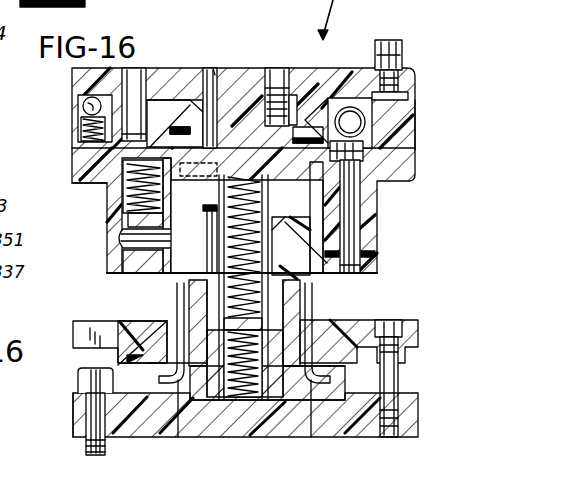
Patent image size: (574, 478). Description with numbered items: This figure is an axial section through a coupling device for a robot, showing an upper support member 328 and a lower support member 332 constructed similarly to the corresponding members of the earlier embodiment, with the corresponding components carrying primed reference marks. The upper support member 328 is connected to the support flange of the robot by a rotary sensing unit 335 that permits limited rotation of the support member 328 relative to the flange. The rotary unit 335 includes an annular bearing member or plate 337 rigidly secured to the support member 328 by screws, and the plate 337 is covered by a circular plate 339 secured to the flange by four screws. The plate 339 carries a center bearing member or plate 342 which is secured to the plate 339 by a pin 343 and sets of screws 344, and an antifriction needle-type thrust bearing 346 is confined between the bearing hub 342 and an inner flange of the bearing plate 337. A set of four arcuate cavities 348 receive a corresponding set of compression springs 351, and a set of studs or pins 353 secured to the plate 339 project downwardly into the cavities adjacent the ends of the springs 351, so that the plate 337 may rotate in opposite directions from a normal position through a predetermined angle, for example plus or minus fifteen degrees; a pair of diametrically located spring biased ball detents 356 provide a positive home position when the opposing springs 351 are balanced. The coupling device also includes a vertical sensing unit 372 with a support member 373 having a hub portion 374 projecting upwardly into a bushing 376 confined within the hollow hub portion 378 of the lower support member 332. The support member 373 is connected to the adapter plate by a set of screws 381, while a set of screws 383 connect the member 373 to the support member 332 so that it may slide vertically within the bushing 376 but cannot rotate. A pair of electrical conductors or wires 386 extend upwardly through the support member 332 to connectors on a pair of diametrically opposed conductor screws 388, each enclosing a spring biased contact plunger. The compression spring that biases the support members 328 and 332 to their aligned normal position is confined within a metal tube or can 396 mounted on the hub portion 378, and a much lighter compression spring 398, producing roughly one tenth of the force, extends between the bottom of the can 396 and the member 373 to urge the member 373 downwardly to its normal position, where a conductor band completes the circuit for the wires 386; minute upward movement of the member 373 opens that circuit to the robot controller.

The rotary sensing unit 335 is at (68, 124).
The upper support member 328 is at (72, 163).
The spring biased ball detents 356 is at (84, 107).
The studs or pins 353 is at (125, 88).
The center bearing member or plate 342 is at (250, 98).
The antifriction needle-type thrust bearing 346 is at (193, 98).
The pin 343 is at (213, 67).
The screws 344 is at (276, 67).
The compression springs 351 is at (357, 100).
The circular plate 339 is at (363, 63).
The annular bearing member or plate 337 is at (398, 98).
The arcuate cavities 348 is at (415, 118).
The metal tube or can 396 is at (283, 218).
The hub portion 374 is at (275, 385).
The compression spring 398 is at (252, 392).
The hollow hub portion 378 is at (340, 224).
The bushing 376 is at (340, 258).
The conductor screws 388 is at (173, 294).
The electrical conductors or wires 386 is at (190, 442).
The lower support member 332 is at (72, 333).
The screws 383 is at (400, 367).
The support member 373 is at (350, 432).
The screws 381 is at (90, 407).
The vertical sensing unit 372 is at (70, 415).